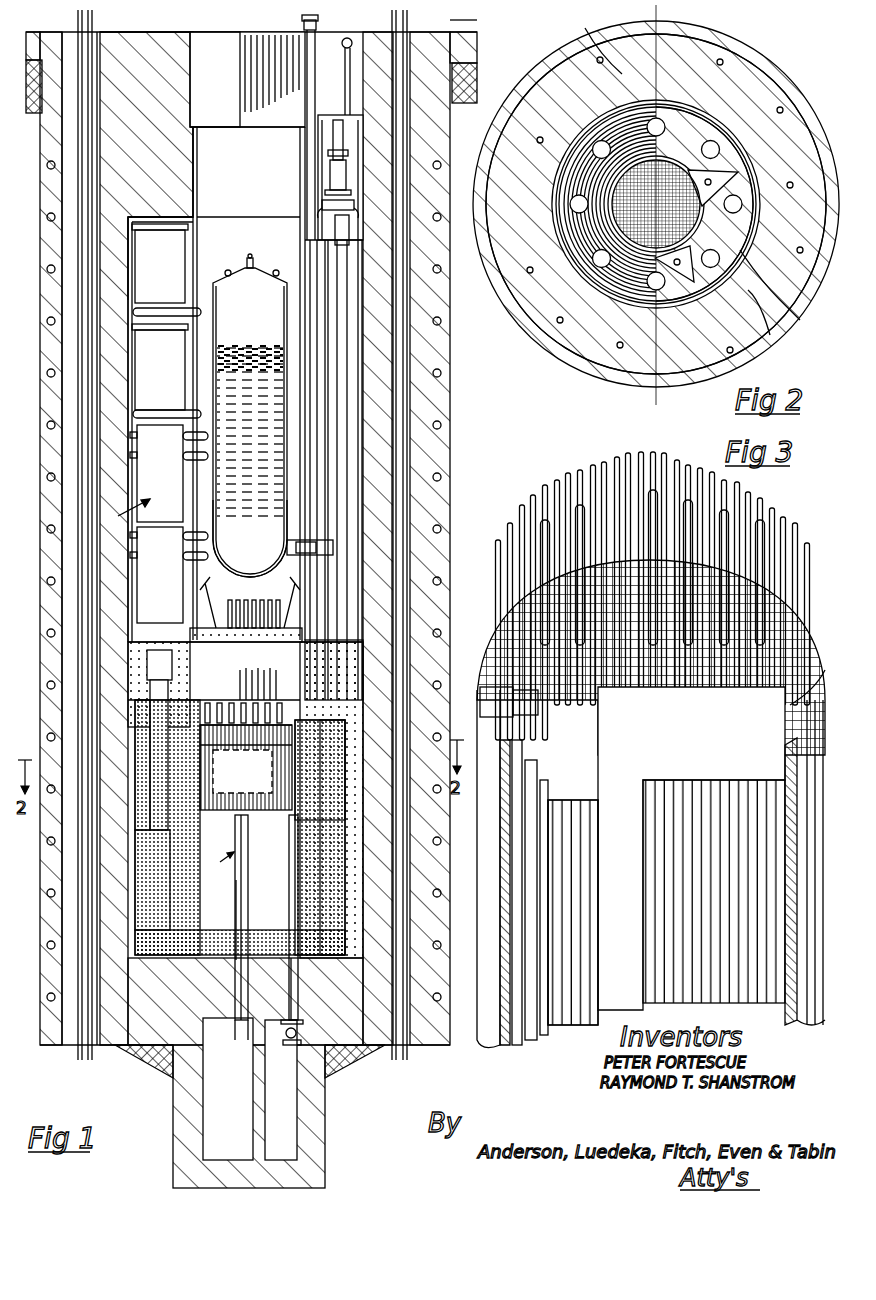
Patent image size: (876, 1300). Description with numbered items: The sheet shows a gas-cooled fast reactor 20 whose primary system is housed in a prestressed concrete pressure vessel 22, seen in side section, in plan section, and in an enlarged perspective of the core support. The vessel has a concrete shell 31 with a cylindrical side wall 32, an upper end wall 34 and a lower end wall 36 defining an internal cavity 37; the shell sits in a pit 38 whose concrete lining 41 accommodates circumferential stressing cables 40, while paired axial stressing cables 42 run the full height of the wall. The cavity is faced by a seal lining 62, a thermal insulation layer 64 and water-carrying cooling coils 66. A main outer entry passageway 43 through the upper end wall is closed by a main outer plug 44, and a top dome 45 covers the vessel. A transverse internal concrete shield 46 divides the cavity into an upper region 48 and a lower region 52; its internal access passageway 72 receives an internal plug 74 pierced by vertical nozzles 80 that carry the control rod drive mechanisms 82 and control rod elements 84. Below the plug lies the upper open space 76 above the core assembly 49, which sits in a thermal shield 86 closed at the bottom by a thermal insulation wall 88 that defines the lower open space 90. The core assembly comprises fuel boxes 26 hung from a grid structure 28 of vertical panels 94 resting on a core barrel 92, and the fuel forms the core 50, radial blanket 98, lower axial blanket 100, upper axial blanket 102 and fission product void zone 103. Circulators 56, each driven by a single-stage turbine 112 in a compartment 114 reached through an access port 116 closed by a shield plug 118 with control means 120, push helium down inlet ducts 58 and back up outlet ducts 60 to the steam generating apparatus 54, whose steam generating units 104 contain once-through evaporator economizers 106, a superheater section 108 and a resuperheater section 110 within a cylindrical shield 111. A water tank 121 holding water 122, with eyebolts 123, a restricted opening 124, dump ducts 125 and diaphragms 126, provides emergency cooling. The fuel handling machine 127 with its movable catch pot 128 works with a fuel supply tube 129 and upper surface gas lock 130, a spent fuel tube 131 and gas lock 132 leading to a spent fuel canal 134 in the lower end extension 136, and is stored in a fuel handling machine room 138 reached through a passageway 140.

In FIG. 1, the reactor 20 is at (223, 246).
In FIG. 1, the prestressed concrete pressure vessel 22 is at (113, 40).
In FIG. 3, the fuel boxes 26 is at (728, 1002).
In FIG. 3, the grid structure 28 is at (709, 744).
In FIG. 1, the concrete shell 31 is at (135, 50).
In FIG. 2, the concrete shell 31 is at (625, 362).
In FIG. 2, the cylindrical side wall 32 is at (568, 330).
In FIG. 1, the upper end wall 34 is at (195, 185).
In FIG. 1, the lower end wall 36 is at (140, 1045).
In FIG. 1, the internal cavity 37 is at (240, 225).
In FIG. 1, the pit 38 is at (445, 108).
In FIG. 1, the circumferential stressing cables 40 is at (438, 378).
In FIG. 1, the concrete lining 41 is at (440, 428).
In FIG. 1, the axial stressing cables 42 is at (80, 30).
In FIG. 2, the axial stressing cables 42 is at (775, 358).
In FIG. 1, the main outer entry passageway 43 is at (192, 100).
In FIG. 1, the main outer plug 44 is at (205, 45).
In FIG. 1, the top dome 45 is at (450, 14).
In FIG. 1, the internal concrete shield 46 is at (192, 662).
In FIG. 1, the upper region 48 is at (345, 478).
In FIG. 1, the core assembly 49 is at (310, 775).
In FIG. 2, the core assembly 49 is at (668, 168).
In FIG. 3, the core assembly 49 is at (580, 1030).
In FIG. 1, the core 50 is at (266, 777).
In FIG. 1, the lower region 52 is at (175, 950).
In FIG. 1, the steam generating apparatus 54 is at (124, 515).
In FIG. 1, the circulators 56 is at (328, 225).
In FIG. 1, the inlet ducts 58 is at (345, 540).
In FIG. 2, the inlet ducts 58 is at (712, 178).
In FIG. 1, the outlet ducts 60 is at (142, 786).
In FIG. 2, the outlet ducts 60 is at (598, 150).
In FIG. 1, the seal lining 62 is at (355, 600).
In FIG. 1, the thermal insulation layer 64 is at (350, 575).
In FIG. 1, the cooling coils 66 is at (360, 622).
In FIG. 1, the internal access passageway 72 is at (190, 648).
In FIG. 1, the internal plug 74 is at (224, 594).
In FIG. 1, the upper open space 76 is at (290, 716).
In FIG. 1, the vertical nozzles 80 is at (262, 680).
In FIG. 3, the vertical nozzles 80 is at (765, 580).
In FIG. 1, the control rod drive mechanisms 82 is at (258, 580).
In FIG. 2, the control rod elements 84 is at (800, 320).
In FIG. 3, the control rod elements 84 is at (757, 672).
In FIG. 1, the thermal shield 86 is at (175, 792).
In FIG. 1, the thermal insulation wall 88 is at (192, 936).
In FIG. 1, the lower open space 90 is at (200, 850).
In FIG. 1, the core barrel 92 is at (320, 790).
In FIG. 2, the core barrel 92 is at (612, 238).
In FIG. 3, the core barrel 92 is at (476, 1025).
In FIG. 3, the vertical panels 94 is at (815, 705).
In FIG. 1, the radial blanket 98 is at (310, 810).
In FIG. 1, the lower axial blanket 100 is at (235, 812).
In FIG. 1, the upper axial blanket 102 is at (215, 747).
In FIG. 1, the fission product void zone 103 is at (215, 732).
In FIG. 1, the steam generating units 104 is at (208, 517).
In FIG. 1, the once-through evaporator economizers 106 is at (174, 278).
In FIG. 1, the superheater section 108 is at (176, 485).
In FIG. 1, the resuperheater section 110 is at (172, 580).
In FIG. 1, the cylindrical shield 111 is at (320, 212).
In FIG. 1, the single-stage turbine 112 is at (330, 182).
In FIG. 1, the compartment 114 is at (335, 140).
In FIG. 1, the access port 116 is at (348, 38).
In FIG. 1, the shield plug 118 is at (308, 30).
In FIG. 1, the control means 120 is at (330, 24).
In FIG. 1, the water tank 121 is at (260, 312).
In FIG. 1, the water 122 is at (250, 348).
In FIG. 1, the eyebolts 123 is at (226, 274).
In FIG. 1, the restricted opening 124 is at (252, 258).
In FIG. 1, the dump ducts 125 is at (330, 520).
In FIG. 1, the diaphragm 126 is at (335, 548).
In FIG. 1, the fuel handling machine 127 is at (216, 906).
In FIG. 1, the movable catch pot 128 is at (300, 905).
In FIG. 1, the fuel supply tube 129 is at (315, 680).
In FIG. 1, the upper surface gas lock 130 is at (305, 60).
In FIG. 1, the spent fuel tube 131 is at (298, 974).
In FIG. 1, the gas lock 132 is at (298, 1008).
In FIG. 1, the spent fuel canal 134 is at (290, 1095).
In FIG. 1, the lower end extension 136 is at (325, 1125).
In FIG. 1, the fuel handling machine room 138 is at (215, 1110).
In FIG. 1, the passageway 140 is at (240, 1042).